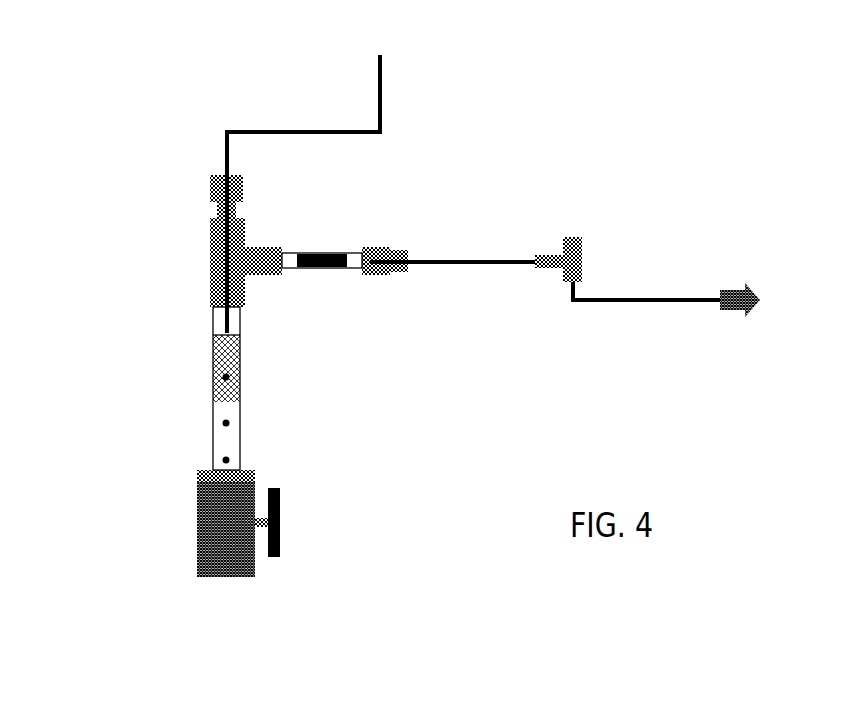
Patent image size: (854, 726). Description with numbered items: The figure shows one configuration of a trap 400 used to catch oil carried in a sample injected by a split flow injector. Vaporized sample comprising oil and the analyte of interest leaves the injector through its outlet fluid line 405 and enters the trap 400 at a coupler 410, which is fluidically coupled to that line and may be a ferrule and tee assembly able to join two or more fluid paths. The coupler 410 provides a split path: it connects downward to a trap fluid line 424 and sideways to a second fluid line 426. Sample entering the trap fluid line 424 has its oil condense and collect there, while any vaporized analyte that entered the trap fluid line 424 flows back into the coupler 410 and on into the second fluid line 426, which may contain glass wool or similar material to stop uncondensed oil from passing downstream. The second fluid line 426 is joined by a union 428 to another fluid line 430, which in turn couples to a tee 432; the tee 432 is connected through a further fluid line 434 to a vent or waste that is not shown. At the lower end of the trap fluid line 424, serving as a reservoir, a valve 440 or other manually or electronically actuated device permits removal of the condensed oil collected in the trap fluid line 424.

The trap 400 is at (160, 268).
The outlet fluid line 405 is at (381, 111).
The coupler 410 is at (235, 237).
The trap fluid line 424 is at (220, 387).
The second fluid line 426 is at (287, 262).
The union 428 is at (398, 250).
The fluid line 430 is at (478, 262).
The tee 432 is at (572, 243).
The fluid line 434 is at (635, 297).
The valve 440 is at (280, 522).